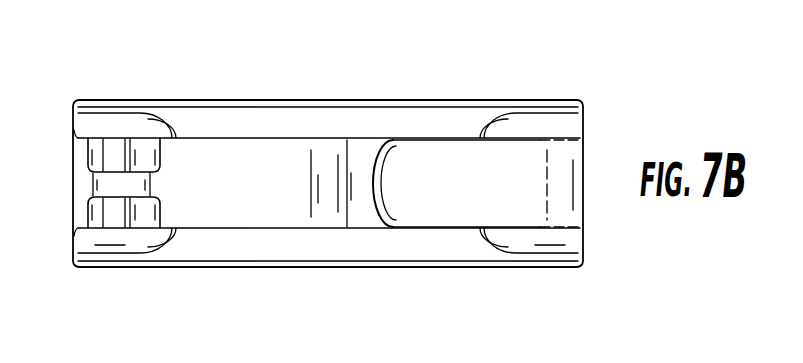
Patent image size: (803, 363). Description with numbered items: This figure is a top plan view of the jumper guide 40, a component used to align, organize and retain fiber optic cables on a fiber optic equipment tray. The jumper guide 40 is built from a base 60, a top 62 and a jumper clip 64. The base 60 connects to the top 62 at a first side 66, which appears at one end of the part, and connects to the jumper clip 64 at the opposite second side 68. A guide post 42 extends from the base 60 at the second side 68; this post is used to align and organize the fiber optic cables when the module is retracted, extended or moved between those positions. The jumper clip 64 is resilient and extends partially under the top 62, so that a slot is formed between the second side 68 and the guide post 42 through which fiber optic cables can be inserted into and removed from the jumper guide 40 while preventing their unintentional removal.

The jumper guide 40 is at (493, 93).
The guide post 42 is at (153, 250).
The base 60 is at (453, 267).
The top 62 is at (458, 138).
The jumper clip 64 is at (263, 230).
The first side 66 is at (585, 172).
The second side 68 is at (72, 182).